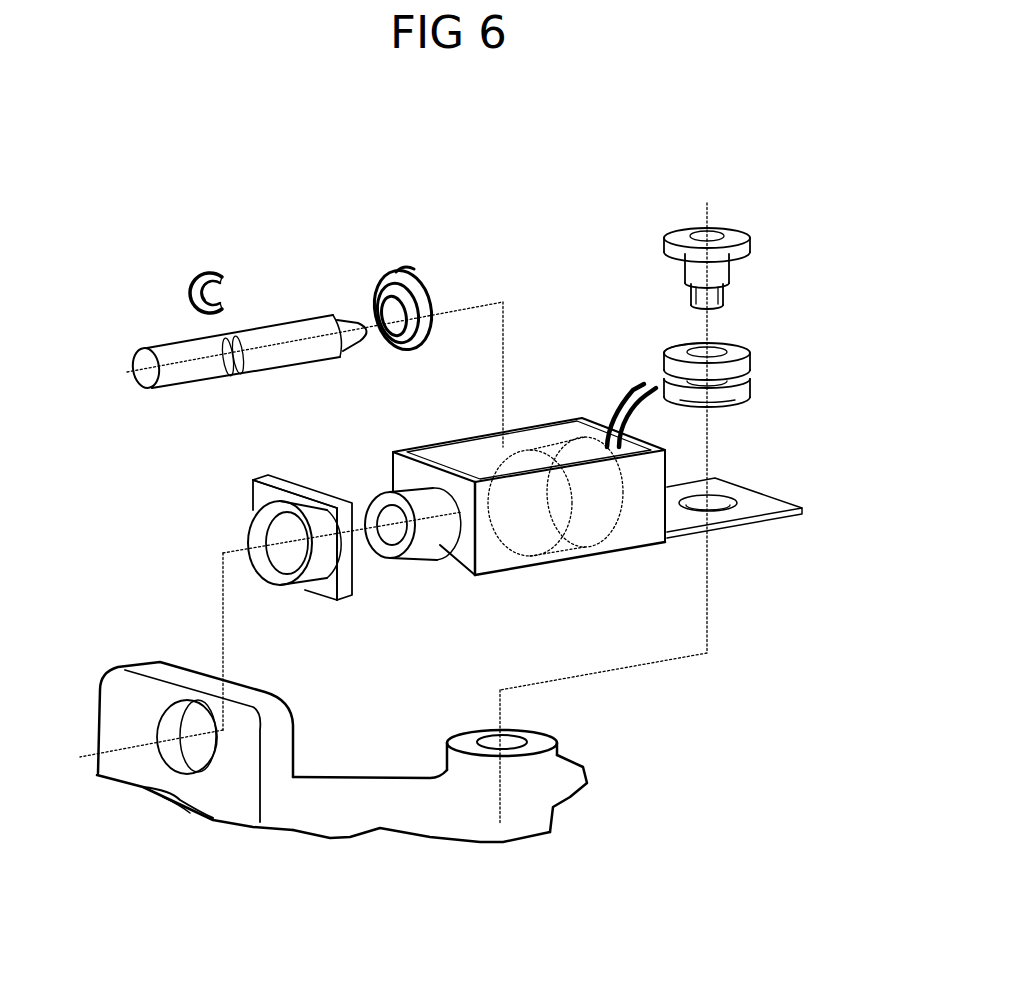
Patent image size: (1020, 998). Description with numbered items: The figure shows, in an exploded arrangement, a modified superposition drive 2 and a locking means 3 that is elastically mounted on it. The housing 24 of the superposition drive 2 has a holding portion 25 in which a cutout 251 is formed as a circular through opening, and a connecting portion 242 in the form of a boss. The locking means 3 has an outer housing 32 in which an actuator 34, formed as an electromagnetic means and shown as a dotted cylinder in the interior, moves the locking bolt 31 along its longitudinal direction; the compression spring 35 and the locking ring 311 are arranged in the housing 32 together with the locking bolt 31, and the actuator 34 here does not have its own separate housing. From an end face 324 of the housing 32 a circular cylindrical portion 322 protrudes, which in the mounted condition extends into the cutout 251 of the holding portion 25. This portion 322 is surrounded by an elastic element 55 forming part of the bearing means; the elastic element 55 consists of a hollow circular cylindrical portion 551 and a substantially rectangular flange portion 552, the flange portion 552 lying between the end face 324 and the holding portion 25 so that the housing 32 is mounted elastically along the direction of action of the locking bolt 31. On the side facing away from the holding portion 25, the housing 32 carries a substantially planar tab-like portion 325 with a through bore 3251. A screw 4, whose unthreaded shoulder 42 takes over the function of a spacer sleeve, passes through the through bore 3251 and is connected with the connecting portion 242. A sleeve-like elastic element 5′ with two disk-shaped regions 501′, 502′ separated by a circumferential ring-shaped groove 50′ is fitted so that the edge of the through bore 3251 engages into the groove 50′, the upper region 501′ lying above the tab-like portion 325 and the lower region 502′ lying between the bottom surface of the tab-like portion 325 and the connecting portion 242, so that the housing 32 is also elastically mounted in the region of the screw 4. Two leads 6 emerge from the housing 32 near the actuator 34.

The superposition drive 2 is at (397, 783).
The housing 24 is at (343, 803).
The connecting portion 242 is at (535, 765).
The holding portion 25 is at (196, 783).
The cutout 251 is at (178, 768).
The locking means 3 is at (615, 507).
The locking bolt 31 is at (287, 330).
The locking ring 311 is at (211, 277).
The housing 32 is at (574, 507).
The circular cylindrical portion 322 is at (422, 538).
The end face 324 is at (457, 555).
The tab-like portion 325 is at (766, 495).
The through bore 3251 is at (727, 505).
The actuator 34 is at (532, 503).
The compression spring 35 is at (418, 292).
The screw 4 is at (746, 241).
The shoulder 42 is at (720, 268).
The sleeve-like elastic element 5′ is at (710, 331).
The disk-shaped region 501′ is at (668, 352).
The ring-shaped groove 50′ is at (750, 411).
The disk-shaped region 502′ is at (699, 398).
The elastic element 55 is at (250, 509).
The circular cylindrical portion 551 is at (252, 523).
The flange portion 552 is at (268, 495).
The electrical wires 6 is at (633, 387).